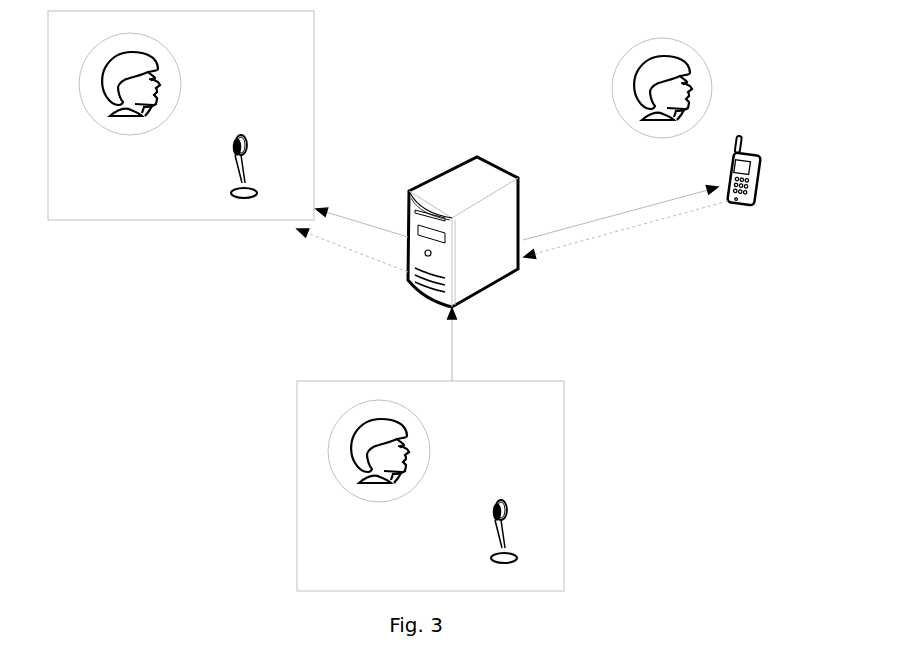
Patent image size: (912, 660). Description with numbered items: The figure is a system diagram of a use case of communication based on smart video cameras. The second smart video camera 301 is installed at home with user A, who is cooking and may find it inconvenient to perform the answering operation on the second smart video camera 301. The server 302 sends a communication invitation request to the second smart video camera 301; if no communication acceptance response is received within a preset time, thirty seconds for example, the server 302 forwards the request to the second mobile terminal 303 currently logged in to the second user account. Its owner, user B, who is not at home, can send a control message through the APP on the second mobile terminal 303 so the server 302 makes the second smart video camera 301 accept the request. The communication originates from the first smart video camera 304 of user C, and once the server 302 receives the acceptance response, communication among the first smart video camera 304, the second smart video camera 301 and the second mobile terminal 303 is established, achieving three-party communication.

The second smart video camera 301 is at (227, 167).
The server 302 is at (477, 157).
The second mobile terminal 303 is at (749, 209).
The first smart video camera 304 is at (487, 535).
The user A is at (183, 85).
The user B is at (713, 89).
The user C is at (430, 451).